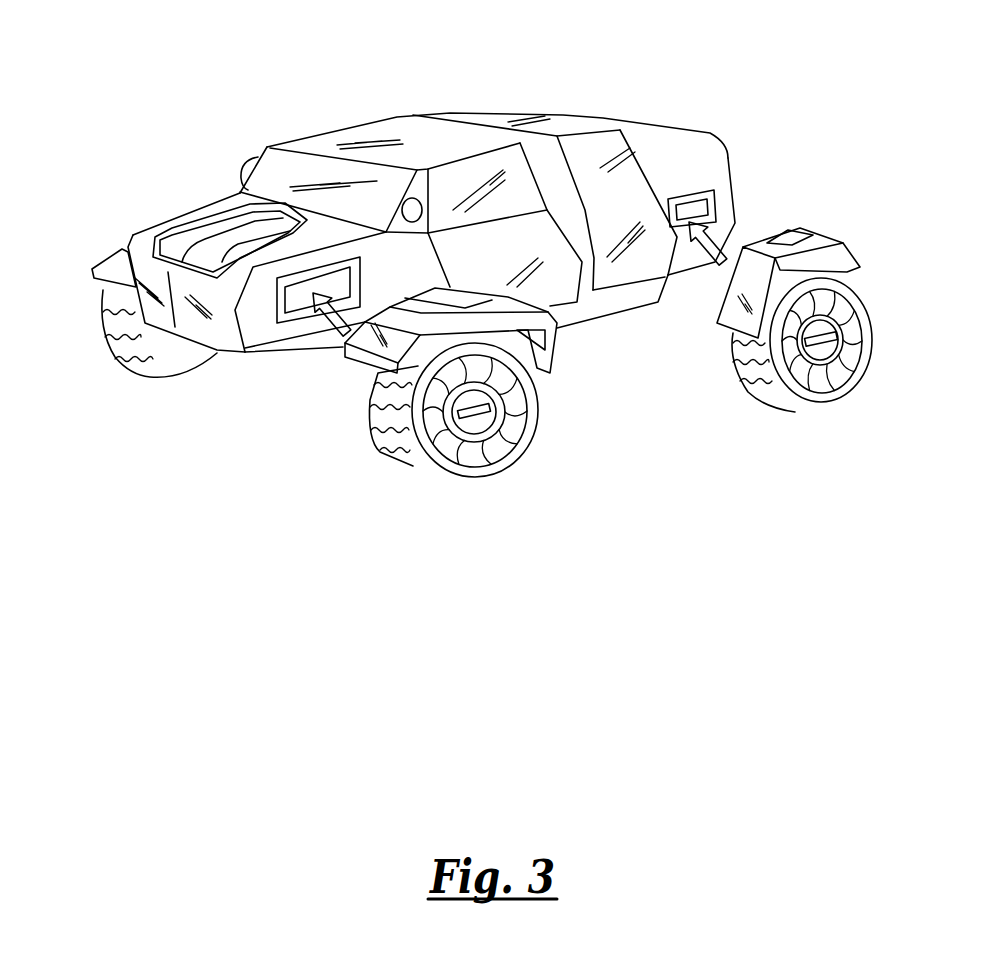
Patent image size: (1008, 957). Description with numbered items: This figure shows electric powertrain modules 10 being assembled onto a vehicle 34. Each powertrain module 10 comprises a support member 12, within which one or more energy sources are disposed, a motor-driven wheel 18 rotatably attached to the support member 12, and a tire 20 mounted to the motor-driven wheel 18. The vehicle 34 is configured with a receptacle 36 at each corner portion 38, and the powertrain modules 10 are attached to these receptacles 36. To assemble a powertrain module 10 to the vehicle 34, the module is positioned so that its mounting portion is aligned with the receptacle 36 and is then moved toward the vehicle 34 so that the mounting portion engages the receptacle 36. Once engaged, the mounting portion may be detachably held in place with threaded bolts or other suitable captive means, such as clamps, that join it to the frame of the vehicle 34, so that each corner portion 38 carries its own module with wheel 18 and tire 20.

The electric powertrain module 10 is at (459, 358).
The support member 12 is at (95, 258).
The motor-driven wheel 18 is at (486, 435).
The tire 20 is at (127, 372).
The vehicle 34 is at (430, 62).
The receptacle 36 is at (305, 325).
The corner portion 38 is at (724, 170).